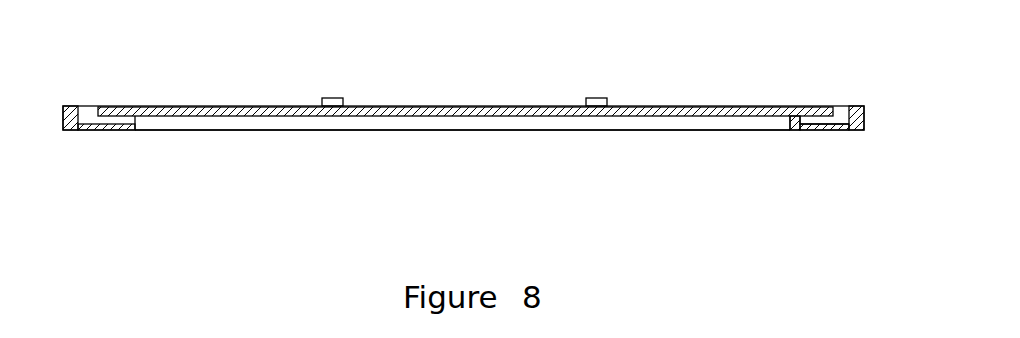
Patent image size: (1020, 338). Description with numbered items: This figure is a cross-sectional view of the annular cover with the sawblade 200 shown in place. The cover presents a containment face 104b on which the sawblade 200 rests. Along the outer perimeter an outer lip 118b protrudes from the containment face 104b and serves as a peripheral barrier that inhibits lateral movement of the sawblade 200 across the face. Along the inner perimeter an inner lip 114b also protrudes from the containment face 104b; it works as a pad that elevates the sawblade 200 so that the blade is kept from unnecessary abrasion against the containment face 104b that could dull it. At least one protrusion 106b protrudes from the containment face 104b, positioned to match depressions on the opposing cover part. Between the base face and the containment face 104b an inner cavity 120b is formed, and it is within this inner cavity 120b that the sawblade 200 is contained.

The containment face 104b is at (838, 132).
The protrusion 106b is at (332, 98).
The inner lip 114b is at (778, 130).
The outer lip 118b is at (860, 106).
The inner cavity 120b is at (815, 130).
The sawblade 200 is at (378, 106).